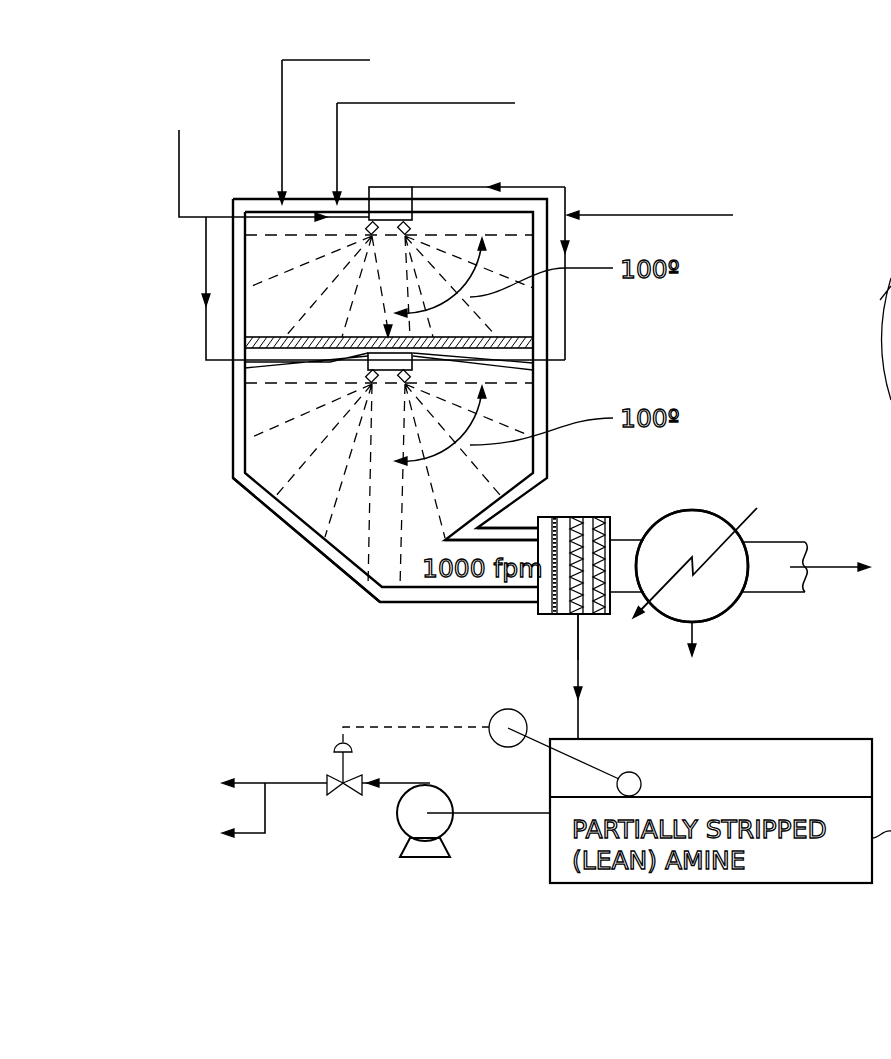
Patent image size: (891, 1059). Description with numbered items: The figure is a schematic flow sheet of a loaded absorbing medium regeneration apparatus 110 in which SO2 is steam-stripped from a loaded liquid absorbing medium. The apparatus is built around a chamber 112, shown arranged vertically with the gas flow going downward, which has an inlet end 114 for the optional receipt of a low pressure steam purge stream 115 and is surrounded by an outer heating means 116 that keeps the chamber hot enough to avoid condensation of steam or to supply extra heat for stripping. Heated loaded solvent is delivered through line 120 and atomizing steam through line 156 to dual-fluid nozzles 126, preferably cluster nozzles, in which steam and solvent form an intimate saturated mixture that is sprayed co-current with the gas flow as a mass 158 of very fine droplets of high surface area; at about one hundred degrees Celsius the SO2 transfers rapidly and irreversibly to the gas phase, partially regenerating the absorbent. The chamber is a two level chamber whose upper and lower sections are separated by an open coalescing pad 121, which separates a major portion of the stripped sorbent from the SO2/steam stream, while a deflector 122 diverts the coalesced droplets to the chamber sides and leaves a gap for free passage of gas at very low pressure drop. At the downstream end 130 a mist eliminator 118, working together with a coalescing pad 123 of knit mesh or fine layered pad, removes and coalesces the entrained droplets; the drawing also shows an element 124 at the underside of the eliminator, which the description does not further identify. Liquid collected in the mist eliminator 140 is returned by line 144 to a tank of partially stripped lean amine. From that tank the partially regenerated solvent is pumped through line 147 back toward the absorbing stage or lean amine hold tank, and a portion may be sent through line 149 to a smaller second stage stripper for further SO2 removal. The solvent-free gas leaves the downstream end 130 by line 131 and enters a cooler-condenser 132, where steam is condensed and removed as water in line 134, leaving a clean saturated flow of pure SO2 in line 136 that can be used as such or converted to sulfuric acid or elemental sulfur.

The loaded absorbing medium regeneration apparatus 110 is at (778, 156).
The chamber 112 is at (547, 400).
The inlet end 114 is at (349, 125).
The low pressure steam purge stream 115 is at (437, 103).
The outer heating means 116 is at (304, 536).
The mist eliminator 118 is at (588, 518).
The line 120 is at (267, 157).
The open coalescing pad 121 is at (540, 340).
The deflector 122 is at (533, 372).
The coalescing pad 123 is at (552, 603).
The drain line 124 is at (583, 616).
The dual-fluid nozzles 126 is at (383, 223).
The downstream end 130 is at (522, 512).
The line 131 is at (630, 540).
The cooler-condenser 132 is at (738, 610).
The line 134 is at (695, 640).
The line 136 is at (785, 542).
The mist eliminator 140 is at (627, 538).
The line 144 is at (580, 704).
The line 147 is at (253, 783).
The line 149 is at (253, 833).
The line 156 is at (627, 213).
The mass of fine liquid droplets 158 is at (383, 341).